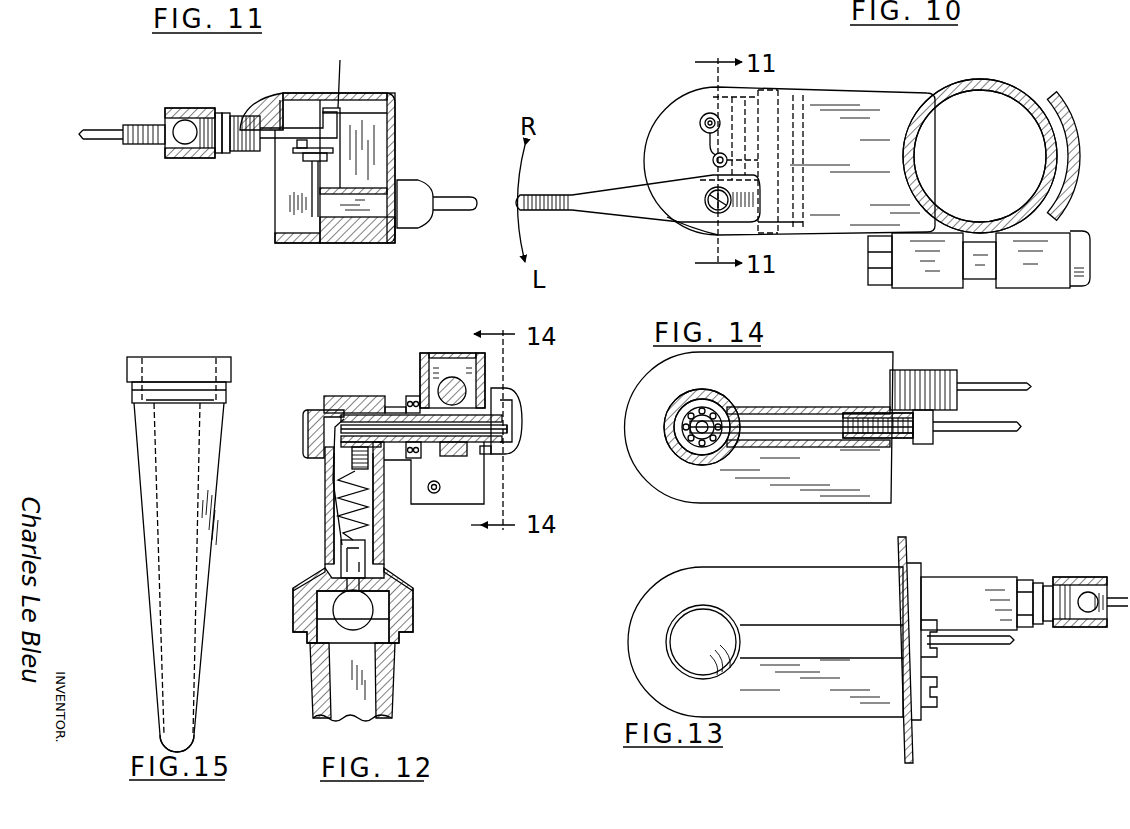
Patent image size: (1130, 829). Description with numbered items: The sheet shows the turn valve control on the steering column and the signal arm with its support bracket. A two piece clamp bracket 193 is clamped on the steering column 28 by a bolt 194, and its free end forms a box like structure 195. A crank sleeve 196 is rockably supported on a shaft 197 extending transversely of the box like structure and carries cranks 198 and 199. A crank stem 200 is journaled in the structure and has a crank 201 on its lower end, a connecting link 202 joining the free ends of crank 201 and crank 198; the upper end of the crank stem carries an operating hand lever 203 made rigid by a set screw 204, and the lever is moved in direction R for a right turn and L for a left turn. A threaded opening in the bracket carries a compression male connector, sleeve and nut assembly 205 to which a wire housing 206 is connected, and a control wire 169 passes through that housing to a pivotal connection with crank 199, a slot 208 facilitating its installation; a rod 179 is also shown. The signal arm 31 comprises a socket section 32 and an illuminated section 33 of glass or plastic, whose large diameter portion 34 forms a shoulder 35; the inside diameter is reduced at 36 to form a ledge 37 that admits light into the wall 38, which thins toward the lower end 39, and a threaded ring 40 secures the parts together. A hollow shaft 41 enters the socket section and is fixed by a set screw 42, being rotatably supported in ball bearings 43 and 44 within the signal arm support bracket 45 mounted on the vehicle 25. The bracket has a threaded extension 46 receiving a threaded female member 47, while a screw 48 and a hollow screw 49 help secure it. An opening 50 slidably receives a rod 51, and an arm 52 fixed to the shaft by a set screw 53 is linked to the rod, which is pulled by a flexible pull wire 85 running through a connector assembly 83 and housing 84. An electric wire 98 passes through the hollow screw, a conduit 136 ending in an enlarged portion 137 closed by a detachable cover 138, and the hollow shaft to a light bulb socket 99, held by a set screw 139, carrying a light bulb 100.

In FIG. 13, the vehicle 25 is at (897, 740).
In FIG. 10, the steering column 28 is at (983, 86).
In FIG. 12, the signal arm 31 is at (325, 540).
In FIG. 12, the socket section 32 is at (296, 626).
In FIG. 15, the illuminated section 33 is at (204, 364).
In FIG. 12, the illuminated section 33 is at (300, 610).
In FIG. 15, the large diameter portion 34 is at (180, 372).
In FIG. 15, the shoulder 35 is at (128, 389).
In FIG. 15, the reduced inside diameter 36 is at (187, 398).
In FIG. 15, the ledge 37 is at (147, 357).
In FIG. 15, the wall 38 is at (144, 430).
In FIG. 15, the lower end 39 is at (192, 718).
In FIG. 12, the threaded ring 40 is at (402, 636).
In FIG. 12, the hollow shaft 41 is at (277, 394).
In FIG. 14, the hollow shaft 41 is at (702, 443).
In FIG. 12, the set screw 42 is at (351, 468).
In FIG. 12, the ball bearing 43 is at (414, 396).
In FIG. 12, the ball bearing 44 is at (520, 447).
In FIG. 14, the ball bearing 44 is at (678, 407).
In FIG. 12, the signal arm support bracket 45 is at (485, 485).
In FIG. 14, the signal arm support bracket 45 is at (670, 480).
In FIG. 13, the signal arm support bracket 45 is at (657, 663).
In FIG. 14, the threaded extension 46 is at (928, 370).
In FIG. 13, the threaded female member 47 is at (947, 593).
In FIG. 13, the screw 48 is at (938, 680).
In FIG. 14, the hollow screw 49 is at (923, 444).
In FIG. 13, the hollow screw 49 is at (937, 657).
In FIG. 12, the opening 50 is at (426, 353).
In FIG. 12, the rod 51 is at (450, 388).
In FIG. 12, the arm 52 is at (460, 528).
In FIG. 12, the set screw 53 is at (499, 392).
In FIG. 13, the compression male connector, sleeve and nut assembly 83 is at (1080, 583).
In FIG. 13, the housing 84 is at (1113, 605).
In FIG. 14, the flexible pull wire 85 is at (1003, 382).
In FIG. 13, the flexible pull wire 85 is at (1121, 597).
In FIG. 12, the electric wire 98 is at (344, 418).
In FIG. 14, the electric wire 98 is at (680, 419).
In FIG. 13, the electric wire 98 is at (977, 646).
In FIG. 12, the light bulb socket 99 is at (365, 555).
In FIG. 12, the light bulb 100 is at (361, 614).
In FIG. 12, the conduit 136 is at (520, 417).
In FIG. 14, the conduit 136 is at (797, 408).
In FIG. 13, the conduit 136 is at (812, 640).
In FIG. 12, the enlarged portion 137 is at (515, 455).
In FIG. 14, the enlarged portion 137 is at (710, 392).
In FIG. 13, the enlarged portion 137 is at (677, 620).
In FIG. 12, the detachable cover 138 is at (520, 402).
In FIG. 13, the detachable cover 138 is at (680, 635).
In FIG. 12, the set screw 139 is at (307, 579).
In FIG. 11, the control wire 169 is at (92, 198).
In FIG. 10, the control wire 169 is at (700, 112).
In FIG. 11, the conductor rod 179 is at (340, 120).
In FIG. 11, the two piece clamp bracket 193 is at (395, 95).
In FIG. 10, the two piece clamp bracket 193 is at (857, 102).
In FIG. 10, the bolt 194 is at (1080, 262).
In FIG. 11, the box like structure 195 is at (365, 172).
In FIG. 10, the box like structure 195 is at (815, 95).
In FIG. 11, the crank sleeve 196 is at (332, 150).
In FIG. 10, the crank sleeve 196 is at (802, 233).
In FIG. 10, the shaft 197 is at (777, 90).
In FIG. 11, the crank 198 is at (293, 151).
In FIG. 10, the crank 199 is at (708, 105).
In FIG. 11, the crank stem 200 is at (385, 208).
In FIG. 10, the crank stem 200 is at (697, 227).
In FIG. 11, the crank 201 is at (302, 140).
In FIG. 10, the crank 201 is at (713, 168).
In FIG. 11, the connecting link 202 is at (303, 162).
In FIG. 10, the connecting link 202 is at (713, 162).
In FIG. 11, the operating hand lever 203 is at (466, 197).
In FIG. 10, the operating hand lever 203 is at (652, 202).
In FIG. 11, the set screw 204 is at (262, 125).
In FIG. 10, the set screw 204 is at (767, 200).
In FIG. 11, the compression male connector, sleeve and nut assembly 205 is at (205, 112).
In FIG. 11, the wire housing 206 is at (150, 144).
In FIG. 11, the slot 208 is at (240, 151).
In FIG. 10, the slot 208 is at (700, 125).